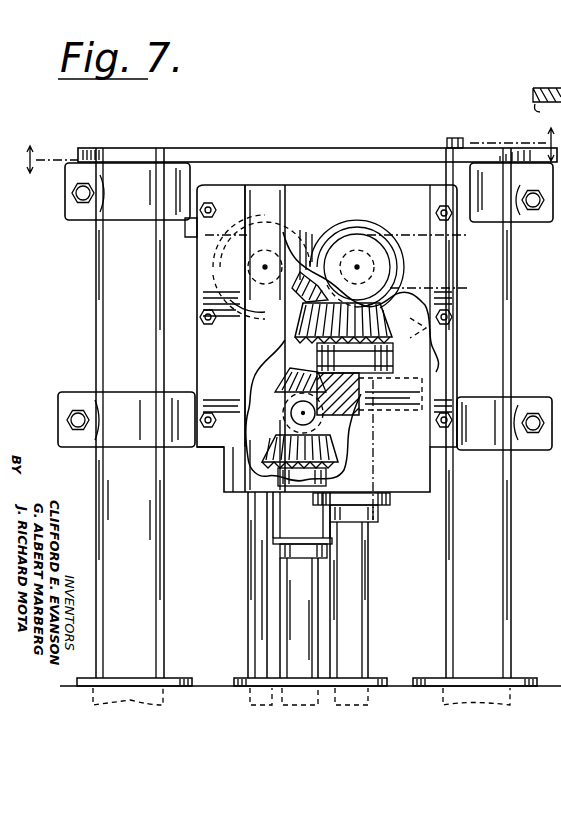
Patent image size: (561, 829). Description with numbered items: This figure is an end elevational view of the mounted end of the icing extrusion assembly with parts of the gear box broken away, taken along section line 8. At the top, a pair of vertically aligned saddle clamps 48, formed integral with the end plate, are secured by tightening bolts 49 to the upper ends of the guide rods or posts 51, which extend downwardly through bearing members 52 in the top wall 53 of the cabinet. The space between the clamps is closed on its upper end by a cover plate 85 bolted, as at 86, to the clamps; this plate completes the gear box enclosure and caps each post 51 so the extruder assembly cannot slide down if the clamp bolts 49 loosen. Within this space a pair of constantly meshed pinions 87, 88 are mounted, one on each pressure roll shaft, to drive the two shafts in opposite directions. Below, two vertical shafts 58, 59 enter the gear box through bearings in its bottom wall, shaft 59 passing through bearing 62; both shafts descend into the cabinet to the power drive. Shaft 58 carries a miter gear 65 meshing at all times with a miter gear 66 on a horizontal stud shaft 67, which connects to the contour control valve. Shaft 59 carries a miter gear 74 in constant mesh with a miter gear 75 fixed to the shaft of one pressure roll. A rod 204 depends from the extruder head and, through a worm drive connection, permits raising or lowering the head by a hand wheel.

The section line 8- 8 is at (285, 152).
The saddle clamps 48 is at (130, 203).
The clamp bolts 49 is at (76, 195).
The guide rods or posts 51 is at (104, 504).
The bearing members 52 is at (521, 679).
The top wall 53 is at (206, 684).
The vertical shaft 58 is at (284, 635).
The vertical shaft 59 is at (355, 643).
The bearing 62 is at (380, 512).
The miter gear 65 is at (283, 470).
The miter gear 66 is at (290, 349).
The horizontal stud shaft 67 is at (300, 418).
The miter gear 74 is at (398, 373).
The miter gear 75 is at (300, 292).
The cover plate 85 is at (337, 152).
The bolts 86 is at (453, 138).
The pinion 87 is at (378, 229).
The pinion 88 is at (285, 200).
The rod 204 is at (268, 574).